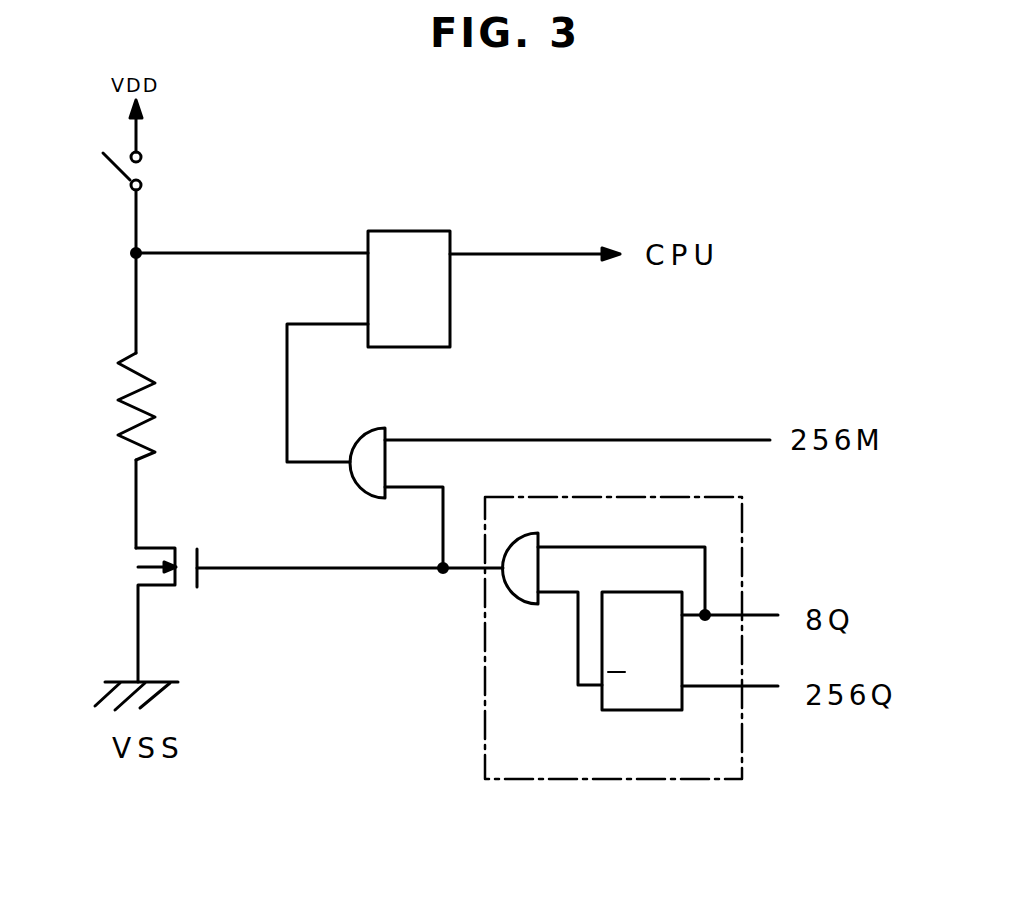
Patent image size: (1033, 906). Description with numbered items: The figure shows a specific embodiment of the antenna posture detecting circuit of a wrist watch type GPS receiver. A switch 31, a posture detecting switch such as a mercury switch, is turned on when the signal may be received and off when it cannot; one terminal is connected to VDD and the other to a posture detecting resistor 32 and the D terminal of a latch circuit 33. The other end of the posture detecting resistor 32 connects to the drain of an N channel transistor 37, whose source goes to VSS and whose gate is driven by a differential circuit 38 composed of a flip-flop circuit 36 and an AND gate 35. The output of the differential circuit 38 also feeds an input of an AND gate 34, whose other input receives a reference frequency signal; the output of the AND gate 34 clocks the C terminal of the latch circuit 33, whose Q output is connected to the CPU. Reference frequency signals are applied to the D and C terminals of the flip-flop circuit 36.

The switch 31 is at (118, 195).
The posture detecting resistor 32 is at (116, 406).
The latch circuit 33 is at (425, 231).
The AND gate 34 is at (360, 444).
The AND gate 35 is at (529, 604).
The flip-flop circuit 36 is at (672, 711).
The N channel transistor 37 is at (132, 548).
The differential circuit 38 is at (718, 781).